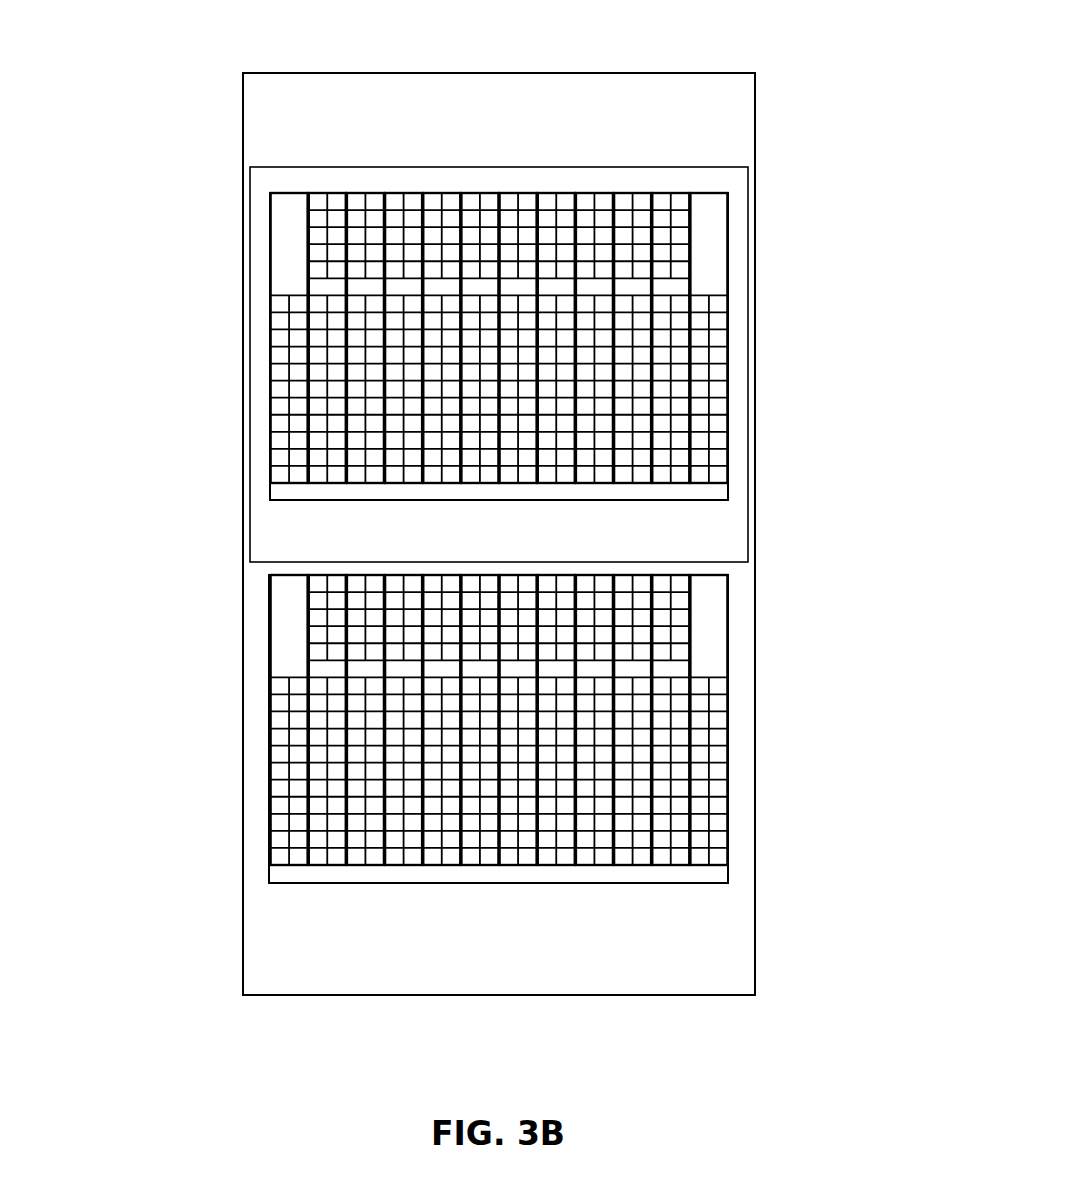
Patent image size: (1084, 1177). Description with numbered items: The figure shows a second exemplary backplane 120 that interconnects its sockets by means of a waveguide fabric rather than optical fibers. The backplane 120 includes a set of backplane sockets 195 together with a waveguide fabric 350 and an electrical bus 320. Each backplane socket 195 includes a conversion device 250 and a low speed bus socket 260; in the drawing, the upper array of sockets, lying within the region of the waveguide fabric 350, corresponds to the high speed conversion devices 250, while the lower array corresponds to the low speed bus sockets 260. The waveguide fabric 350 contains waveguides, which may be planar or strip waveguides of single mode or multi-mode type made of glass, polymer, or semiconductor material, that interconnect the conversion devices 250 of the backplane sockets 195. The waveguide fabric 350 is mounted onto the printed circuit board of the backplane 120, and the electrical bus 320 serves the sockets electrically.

The backplane 120 is at (345, 60).
The backplane sockets 195 is at (387, 576).
The conversion device 250 is at (307, 575).
The low speed bus socket 260 is at (499, 767).
The electrical bus 320 is at (728, 494).
The waveguide fabric 350 is at (748, 190).